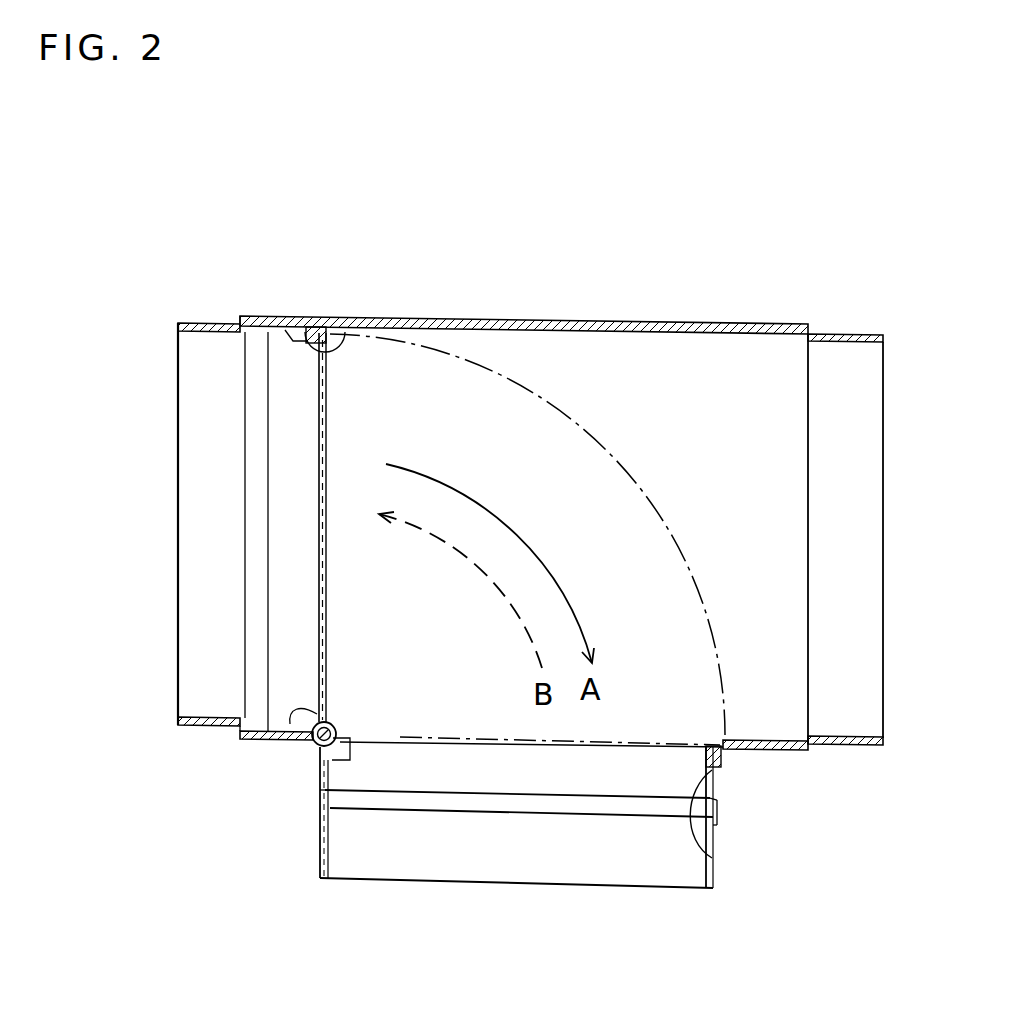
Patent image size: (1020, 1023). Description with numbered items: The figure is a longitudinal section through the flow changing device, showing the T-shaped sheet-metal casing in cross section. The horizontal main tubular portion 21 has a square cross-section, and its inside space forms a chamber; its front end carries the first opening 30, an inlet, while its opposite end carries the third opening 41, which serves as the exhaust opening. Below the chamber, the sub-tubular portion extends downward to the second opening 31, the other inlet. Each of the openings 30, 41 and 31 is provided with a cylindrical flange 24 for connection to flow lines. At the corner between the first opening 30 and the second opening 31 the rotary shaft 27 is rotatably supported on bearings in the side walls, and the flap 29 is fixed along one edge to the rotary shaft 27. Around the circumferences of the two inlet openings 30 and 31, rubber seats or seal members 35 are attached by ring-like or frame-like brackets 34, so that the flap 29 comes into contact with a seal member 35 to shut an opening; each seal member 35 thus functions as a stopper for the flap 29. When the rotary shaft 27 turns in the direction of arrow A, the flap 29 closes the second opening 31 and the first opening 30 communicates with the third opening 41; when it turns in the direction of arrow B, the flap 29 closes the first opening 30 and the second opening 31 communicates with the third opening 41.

The main tubular portion 21 is at (610, 323).
The cylindrical flange 24 is at (320, 880).
The rotary shaft 27 is at (312, 742).
The flap 29 is at (320, 395).
The first opening 30 is at (197, 655).
The second opening 31 is at (522, 805).
The bracket 34 is at (350, 335).
The seal member 35 is at (317, 320).
The third opening 41 is at (869, 431).